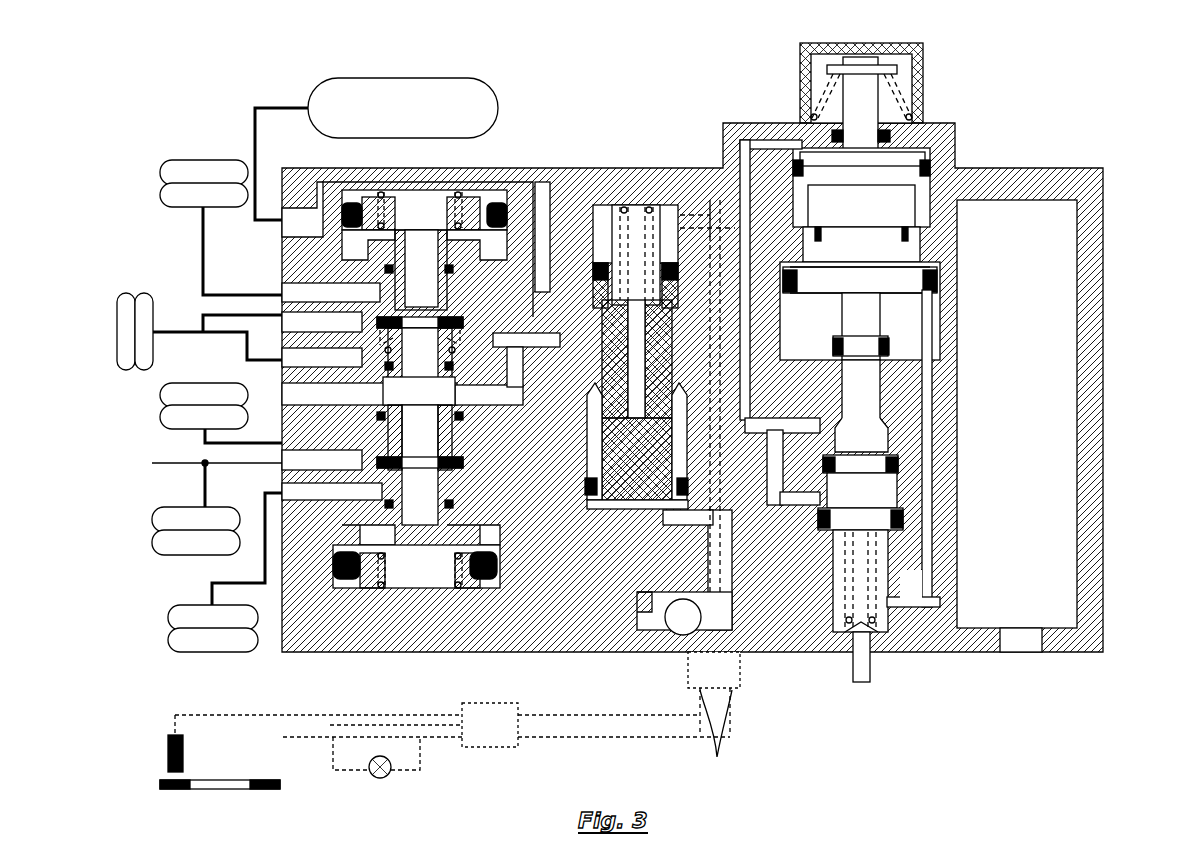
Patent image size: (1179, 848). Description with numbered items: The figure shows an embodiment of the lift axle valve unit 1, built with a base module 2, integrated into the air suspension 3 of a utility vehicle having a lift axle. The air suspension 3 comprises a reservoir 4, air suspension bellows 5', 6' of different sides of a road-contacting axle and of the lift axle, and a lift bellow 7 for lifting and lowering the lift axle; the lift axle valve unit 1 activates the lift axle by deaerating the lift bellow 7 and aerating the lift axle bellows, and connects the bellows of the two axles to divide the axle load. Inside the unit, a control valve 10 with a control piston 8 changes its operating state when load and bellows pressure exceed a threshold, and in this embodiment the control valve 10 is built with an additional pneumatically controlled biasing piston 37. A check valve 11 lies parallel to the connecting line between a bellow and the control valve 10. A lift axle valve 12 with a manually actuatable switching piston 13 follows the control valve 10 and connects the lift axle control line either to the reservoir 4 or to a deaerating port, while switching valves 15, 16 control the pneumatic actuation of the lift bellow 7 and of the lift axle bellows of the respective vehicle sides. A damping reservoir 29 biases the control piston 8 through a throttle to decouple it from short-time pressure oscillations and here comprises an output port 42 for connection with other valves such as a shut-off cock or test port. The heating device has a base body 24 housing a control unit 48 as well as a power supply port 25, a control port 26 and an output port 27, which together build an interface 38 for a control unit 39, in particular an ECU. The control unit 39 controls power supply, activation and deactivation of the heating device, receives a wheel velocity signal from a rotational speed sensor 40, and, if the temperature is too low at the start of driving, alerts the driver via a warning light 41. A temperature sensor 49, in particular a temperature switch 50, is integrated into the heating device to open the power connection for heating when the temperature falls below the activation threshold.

The lift axle valve unit 1 is at (695, 339).
The base module 2 is at (1080, 118).
The air suspension 3 is at (208, 125).
The reservoir 4 is at (406, 120).
The air suspension bellow 5' is at (163, 509).
The air suspension bellow 6' is at (184, 572).
The lift bellow 7 is at (120, 327).
The control piston 8 is at (966, 472).
The control valve 10 is at (862, 316).
The check valve 11 is at (683, 627).
The lift axle valve 12 is at (660, 358).
The switching piston 13 is at (633, 240).
The switching valve 15 is at (420, 419).
The switching valve 16 is at (419, 250).
The base body 24 is at (714, 670).
The control unit 48 is at (738, 679).
The port 25 is at (722, 736).
The control port 26 is at (722, 736).
The output port 27 is at (722, 736).
The damping reservoir 29 is at (1024, 424).
The biasing piston 37 is at (903, 200).
The interface 38 is at (686, 697).
The control unit 39 is at (500, 735).
The rotational speed sensor 40 is at (162, 752).
The warning light 41 is at (375, 778).
The output port 42 is at (1022, 640).
The temperature sensor 49 is at (762, 671).
The temperature switch 50 is at (740, 682).